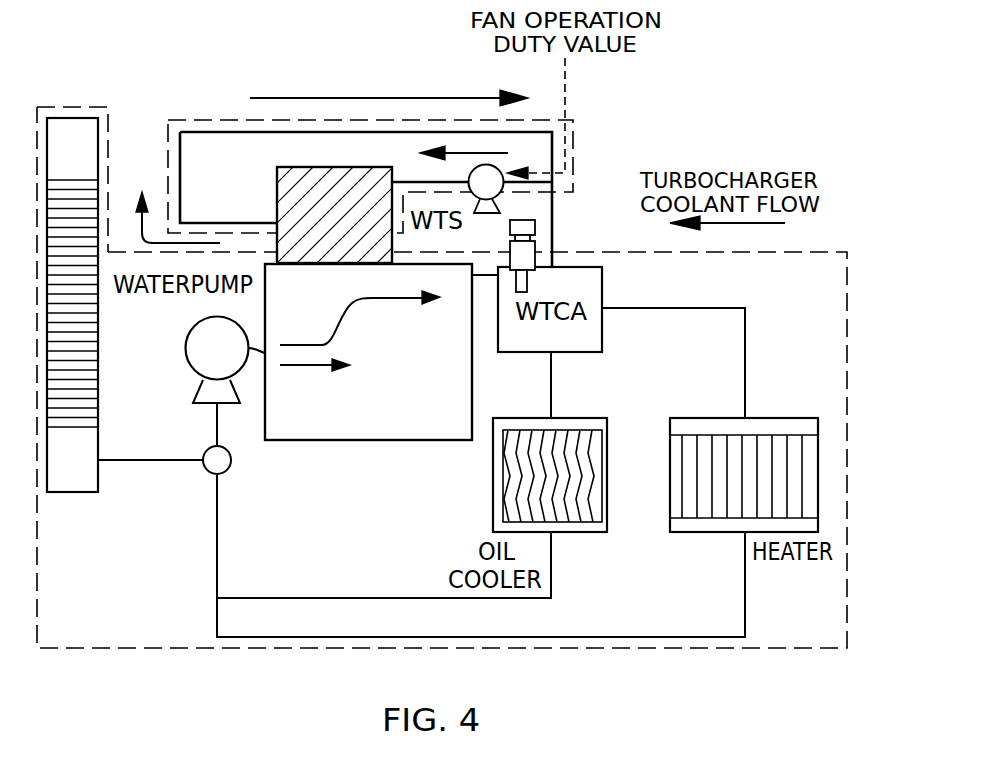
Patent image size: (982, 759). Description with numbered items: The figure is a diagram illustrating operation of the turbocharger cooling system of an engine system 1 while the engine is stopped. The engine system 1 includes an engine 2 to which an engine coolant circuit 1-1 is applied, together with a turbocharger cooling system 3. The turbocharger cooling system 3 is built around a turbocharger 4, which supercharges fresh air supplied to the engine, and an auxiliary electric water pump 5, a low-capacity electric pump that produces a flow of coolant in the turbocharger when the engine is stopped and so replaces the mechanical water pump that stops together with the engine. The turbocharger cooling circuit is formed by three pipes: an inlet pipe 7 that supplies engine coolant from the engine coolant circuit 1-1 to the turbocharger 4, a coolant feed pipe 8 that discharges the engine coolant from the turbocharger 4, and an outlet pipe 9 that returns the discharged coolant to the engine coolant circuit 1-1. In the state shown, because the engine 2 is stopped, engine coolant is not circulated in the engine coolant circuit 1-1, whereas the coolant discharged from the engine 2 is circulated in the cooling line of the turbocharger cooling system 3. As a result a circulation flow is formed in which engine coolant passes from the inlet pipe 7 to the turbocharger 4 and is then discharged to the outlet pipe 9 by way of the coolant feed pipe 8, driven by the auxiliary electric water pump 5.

The engine system 1 is at (158, 63).
The engine coolant circuit 1-1 is at (847, 250).
The engine 2 is at (313, 441).
The turbocharger cooling system 3 is at (573, 157).
The turbocharger 4 is at (301, 166).
The auxiliary electric water pump 5 is at (503, 187).
The inlet pipe 7 is at (408, 182).
The coolant feed pipe 8 is at (183, 175).
The outlet pipe 9 is at (363, 131).